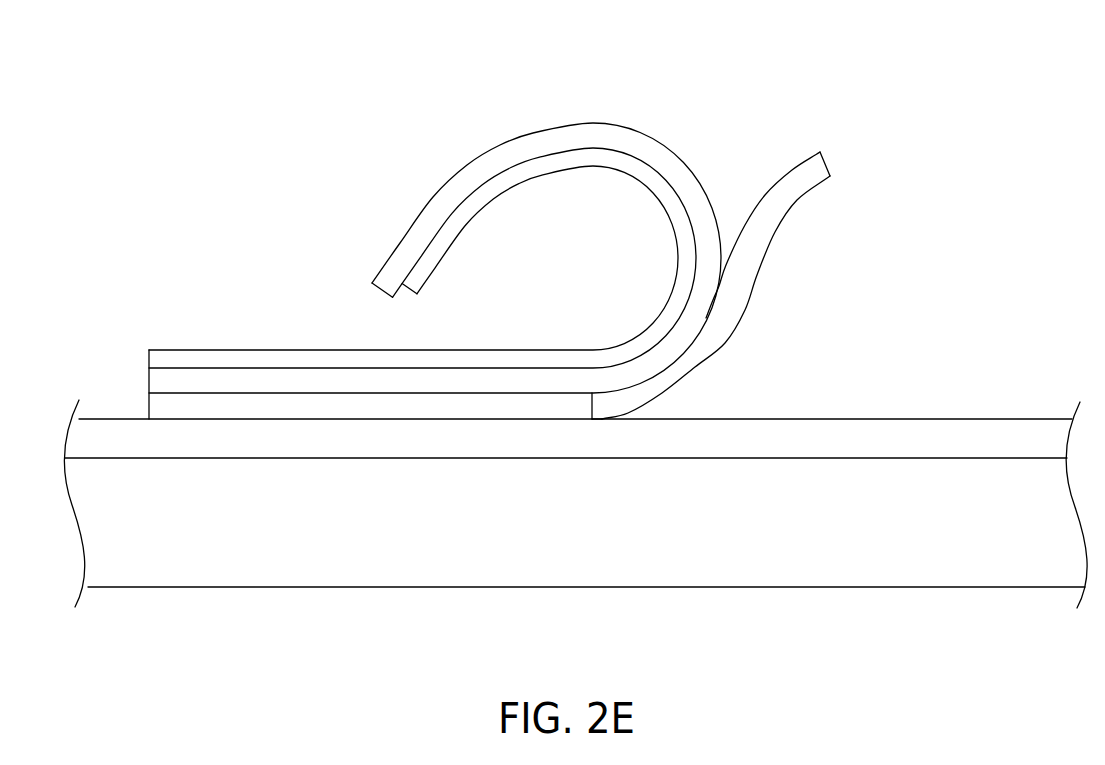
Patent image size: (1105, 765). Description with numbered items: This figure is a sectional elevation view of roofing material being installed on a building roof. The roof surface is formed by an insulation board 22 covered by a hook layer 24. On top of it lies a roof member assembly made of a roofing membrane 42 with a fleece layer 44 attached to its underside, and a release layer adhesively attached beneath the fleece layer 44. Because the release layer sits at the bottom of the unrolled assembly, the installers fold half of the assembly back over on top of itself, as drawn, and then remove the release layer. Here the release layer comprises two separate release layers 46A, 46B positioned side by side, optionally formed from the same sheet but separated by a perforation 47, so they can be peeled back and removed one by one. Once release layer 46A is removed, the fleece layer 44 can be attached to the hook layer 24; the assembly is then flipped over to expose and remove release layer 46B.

The insulation board 22 is at (893, 557).
The hook layer 24 is at (943, 442).
The roofing membrane 42 is at (650, 178).
The fleece layer 44 is at (572, 123).
The release layer 46A is at (800, 158).
The release layer 46B is at (215, 408).
The perforation 47 is at (590, 408).